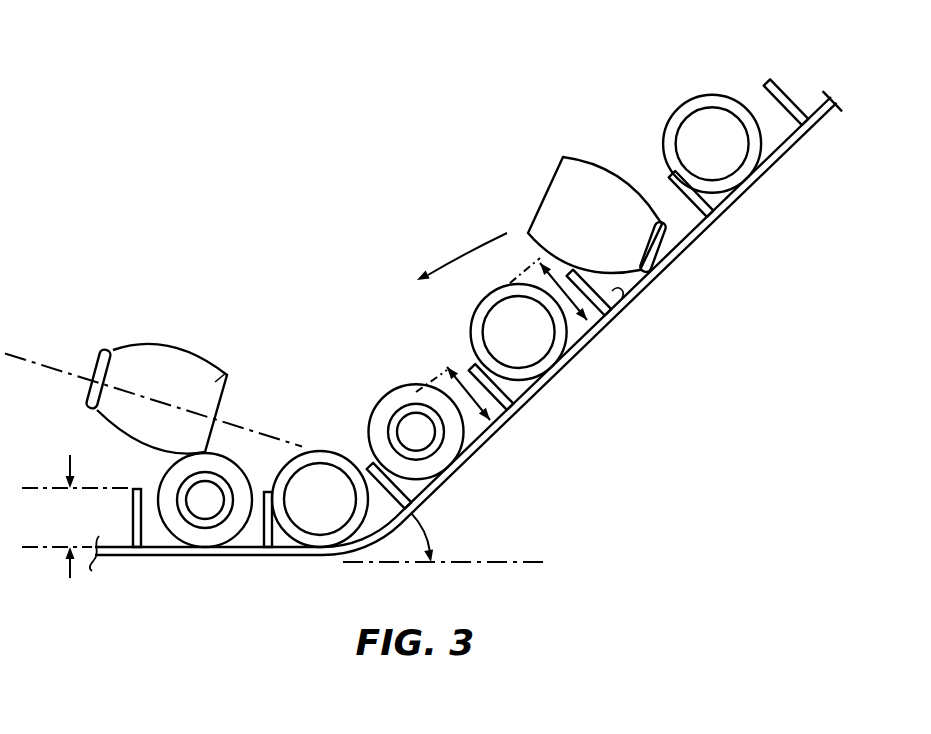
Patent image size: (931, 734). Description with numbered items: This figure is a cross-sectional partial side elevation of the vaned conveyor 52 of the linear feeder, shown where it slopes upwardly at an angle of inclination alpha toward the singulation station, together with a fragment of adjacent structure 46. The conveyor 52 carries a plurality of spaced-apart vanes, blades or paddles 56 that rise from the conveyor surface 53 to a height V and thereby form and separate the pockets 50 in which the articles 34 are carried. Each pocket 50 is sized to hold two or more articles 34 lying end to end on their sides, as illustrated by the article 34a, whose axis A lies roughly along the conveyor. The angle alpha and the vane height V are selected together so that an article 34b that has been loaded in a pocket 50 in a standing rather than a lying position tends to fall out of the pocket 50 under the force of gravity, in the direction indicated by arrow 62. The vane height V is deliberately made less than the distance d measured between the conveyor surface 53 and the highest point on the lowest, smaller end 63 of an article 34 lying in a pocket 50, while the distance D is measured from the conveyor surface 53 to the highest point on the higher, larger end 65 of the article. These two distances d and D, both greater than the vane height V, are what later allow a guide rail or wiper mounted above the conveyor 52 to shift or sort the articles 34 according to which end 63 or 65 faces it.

The articles 34 is at (548, 368).
The article lying in pocket 34a is at (160, 362).
The standing article 34b is at (577, 222).
The frame 46 is at (497, 5).
The pockets 50 is at (381, 506).
The vaned conveyor 52 is at (730, 222).
The conveyor surface 53 is at (244, 548).
The vanes 56 is at (142, 518).
The arrow 62 is at (462, 247).
The lowest end of article 63 is at (108, 346).
The higher end of article 65 is at (217, 380).
The drum axis A is at (20, 352).
The height of vanes V is at (77, 516).
The angle of inclination alpha is at (443, 537).
The distance to highest point of lowest end d is at (453, 393).
The distance to highest point of highest end D is at (548, 289).